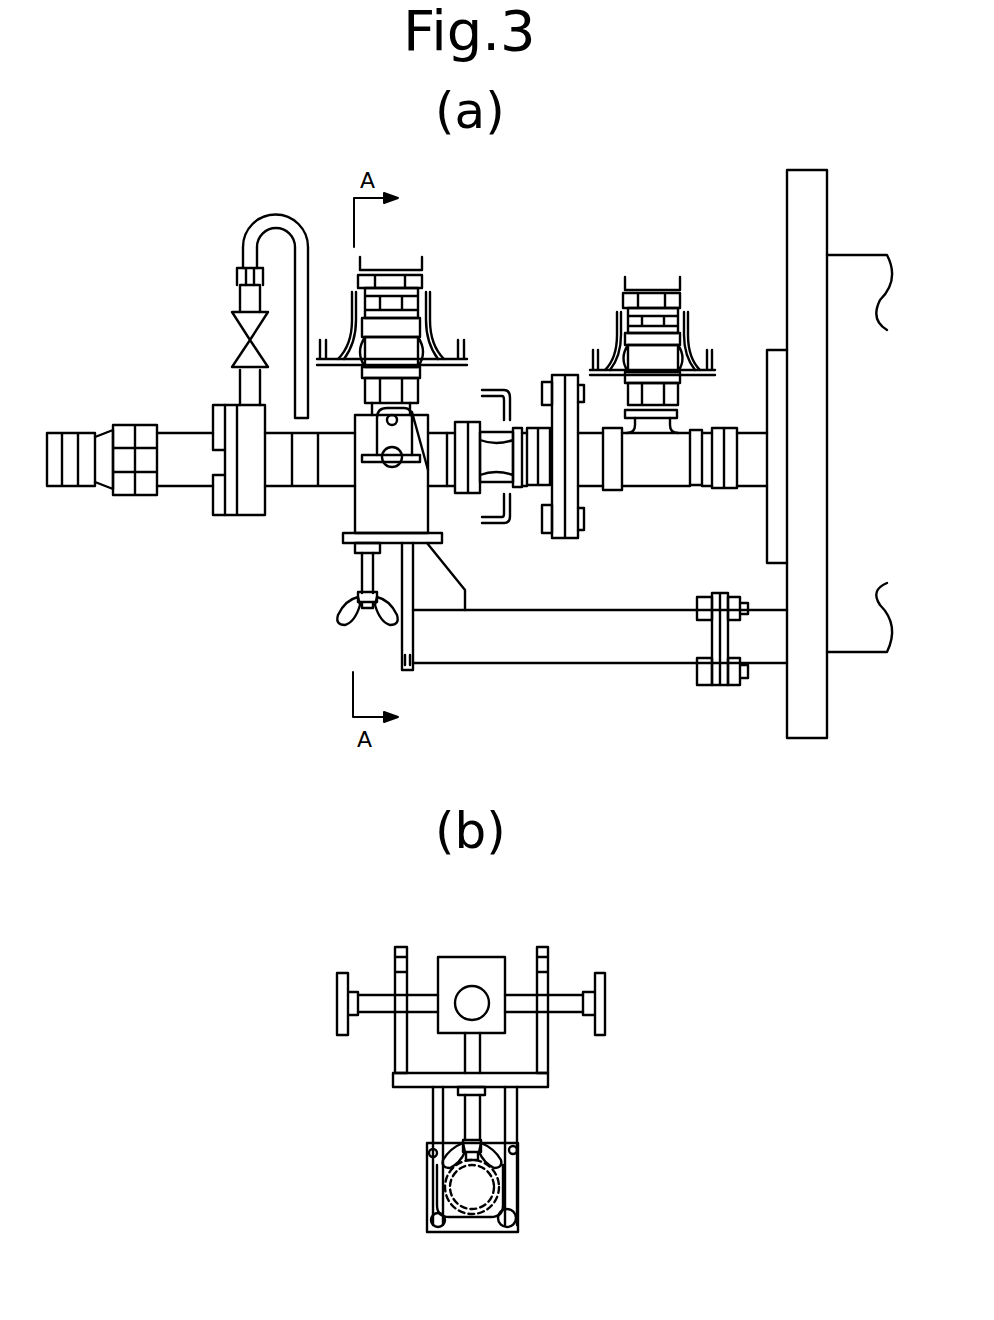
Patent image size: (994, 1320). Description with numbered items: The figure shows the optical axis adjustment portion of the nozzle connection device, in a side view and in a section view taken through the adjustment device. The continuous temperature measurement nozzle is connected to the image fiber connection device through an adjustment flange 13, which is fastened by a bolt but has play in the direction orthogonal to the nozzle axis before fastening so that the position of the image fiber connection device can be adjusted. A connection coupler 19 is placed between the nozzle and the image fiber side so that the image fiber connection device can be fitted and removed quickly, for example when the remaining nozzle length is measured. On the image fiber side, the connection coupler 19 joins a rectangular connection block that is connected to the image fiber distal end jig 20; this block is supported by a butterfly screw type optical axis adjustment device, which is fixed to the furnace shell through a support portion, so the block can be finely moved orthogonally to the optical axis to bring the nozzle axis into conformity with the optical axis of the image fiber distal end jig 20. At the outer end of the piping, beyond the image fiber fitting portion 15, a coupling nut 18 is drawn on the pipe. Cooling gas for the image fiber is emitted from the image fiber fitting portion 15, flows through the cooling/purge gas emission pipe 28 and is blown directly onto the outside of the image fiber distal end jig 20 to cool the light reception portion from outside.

The adjustment flange 13 is at (565, 372).
The image fiber fitting portion 15 is at (247, 508).
The hose coupling nut 18 is at (140, 497).
The connection coupler 19 is at (470, 443).
The image fiber distal end jig 20 is at (305, 474).
The cooling/purge gas emission pipe 28 is at (248, 232).